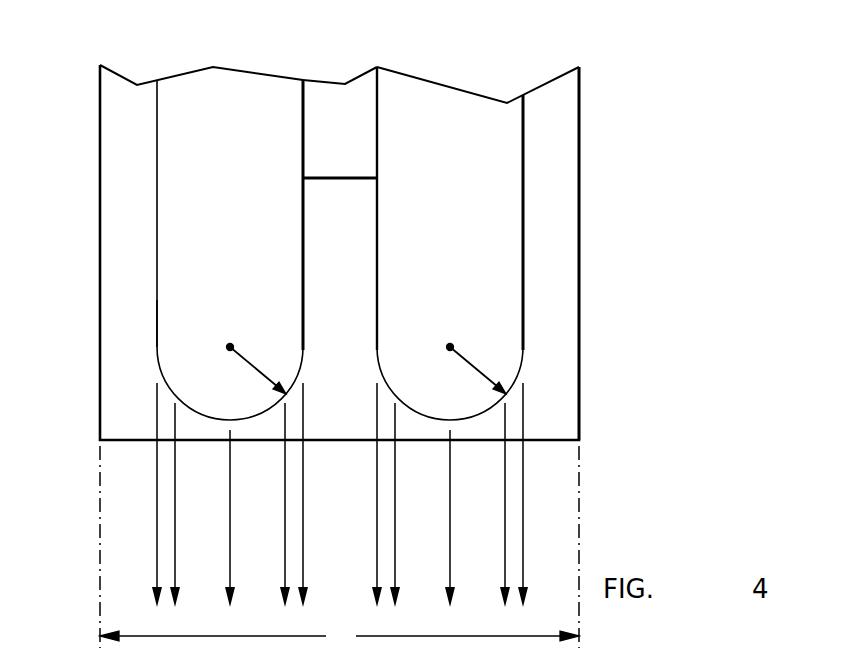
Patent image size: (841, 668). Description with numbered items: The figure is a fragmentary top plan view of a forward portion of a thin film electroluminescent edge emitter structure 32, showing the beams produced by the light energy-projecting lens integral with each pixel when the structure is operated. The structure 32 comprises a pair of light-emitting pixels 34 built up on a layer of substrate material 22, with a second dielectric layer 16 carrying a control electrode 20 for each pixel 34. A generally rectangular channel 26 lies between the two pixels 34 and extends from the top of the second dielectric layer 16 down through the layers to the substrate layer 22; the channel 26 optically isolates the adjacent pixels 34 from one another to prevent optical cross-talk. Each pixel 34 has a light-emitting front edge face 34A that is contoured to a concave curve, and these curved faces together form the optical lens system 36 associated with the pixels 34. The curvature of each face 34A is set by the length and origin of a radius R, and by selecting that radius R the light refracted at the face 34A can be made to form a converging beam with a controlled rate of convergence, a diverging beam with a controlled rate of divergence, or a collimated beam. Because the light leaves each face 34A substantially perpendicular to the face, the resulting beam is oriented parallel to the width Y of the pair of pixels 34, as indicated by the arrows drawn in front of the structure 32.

The TFEL edge emitter structure 32 is at (657, 142).
The substrate material layer 22 is at (557, 297).
The control electrode 20 is at (253, 93).
The second dielectric layer 16 is at (345, 100).
The channel 26 is at (340, 350).
The light-emitting pixel 34 is at (195, 92).
The light-emitting front edge face 34A is at (203, 421).
The optical lens system 36 is at (141, 369).
The radius R is at (255, 362).
The width Y is at (339, 548).